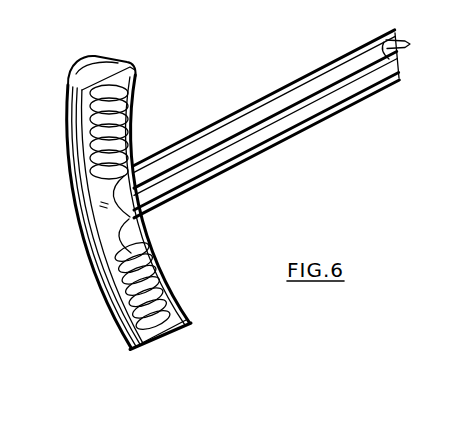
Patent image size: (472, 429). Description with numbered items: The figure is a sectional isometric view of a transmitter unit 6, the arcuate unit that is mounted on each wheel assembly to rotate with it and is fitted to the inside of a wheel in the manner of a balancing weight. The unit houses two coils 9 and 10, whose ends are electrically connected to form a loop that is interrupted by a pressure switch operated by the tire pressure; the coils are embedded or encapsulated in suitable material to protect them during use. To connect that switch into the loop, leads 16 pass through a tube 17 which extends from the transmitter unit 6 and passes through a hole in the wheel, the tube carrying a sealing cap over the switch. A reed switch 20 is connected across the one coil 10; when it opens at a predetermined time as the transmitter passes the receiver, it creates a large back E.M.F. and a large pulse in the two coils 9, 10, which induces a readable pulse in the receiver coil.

The transmitter unit 6 is at (150, 340).
The coil 9 is at (152, 258).
The coil 10 is at (130, 118).
The leads 16 is at (406, 43).
The tube 17 is at (257, 101).
The reed switch 20 is at (105, 200).